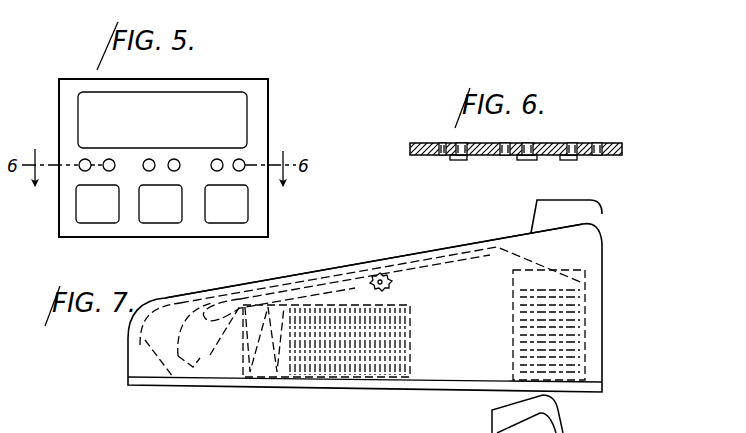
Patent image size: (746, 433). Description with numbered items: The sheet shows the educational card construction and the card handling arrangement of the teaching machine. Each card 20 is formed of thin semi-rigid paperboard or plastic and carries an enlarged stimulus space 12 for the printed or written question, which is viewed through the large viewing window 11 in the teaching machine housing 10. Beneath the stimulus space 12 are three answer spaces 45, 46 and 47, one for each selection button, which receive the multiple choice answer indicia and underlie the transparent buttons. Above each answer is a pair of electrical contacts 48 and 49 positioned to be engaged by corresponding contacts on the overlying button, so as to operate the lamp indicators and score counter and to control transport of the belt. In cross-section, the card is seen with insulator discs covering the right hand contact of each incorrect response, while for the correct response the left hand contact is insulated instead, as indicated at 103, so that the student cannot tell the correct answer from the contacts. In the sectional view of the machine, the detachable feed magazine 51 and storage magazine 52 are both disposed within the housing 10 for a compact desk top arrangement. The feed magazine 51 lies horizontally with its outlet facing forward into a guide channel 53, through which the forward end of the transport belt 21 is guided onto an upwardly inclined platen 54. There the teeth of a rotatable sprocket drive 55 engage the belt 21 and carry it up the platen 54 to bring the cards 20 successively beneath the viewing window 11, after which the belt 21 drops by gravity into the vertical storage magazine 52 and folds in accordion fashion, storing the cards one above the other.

In FIG. 7, the teaching machine housing 10 is at (604, 242).
In FIG. 7, the viewing window 11 is at (419, 251).
In FIG. 5, the stimulus space 12 is at (244, 111).
In FIG. 5, the educational card 20 is at (254, 78).
In FIG. 6, the educational card 20 is at (624, 142).
In FIG. 7, the transport belt 21 is at (210, 356).
In FIG. 5, the answer space 45 is at (76, 214).
In FIG. 5, the answer space 46 is at (158, 222).
In FIG. 5, the answer space 47 is at (228, 222).
In FIG. 5, the electrical contact 48 is at (84, 159).
In FIG. 6, the electrical contact 48 is at (440, 143).
In FIG. 5, the electrical contact 49 is at (109, 159).
In FIG. 6, the electrical contact 49 is at (461, 144).
In FIG. 7, the feed magazine 51 is at (408, 306).
In FIG. 7, the storage magazine 52 is at (586, 290).
In FIG. 7, the guide channel 53 is at (145, 340).
In FIG. 7, the inclined platen 54 is at (420, 267).
In FIG. 7, the sprocket drive 55 is at (352, 272).
In FIG. 6, the insulator 103 is at (572, 160).